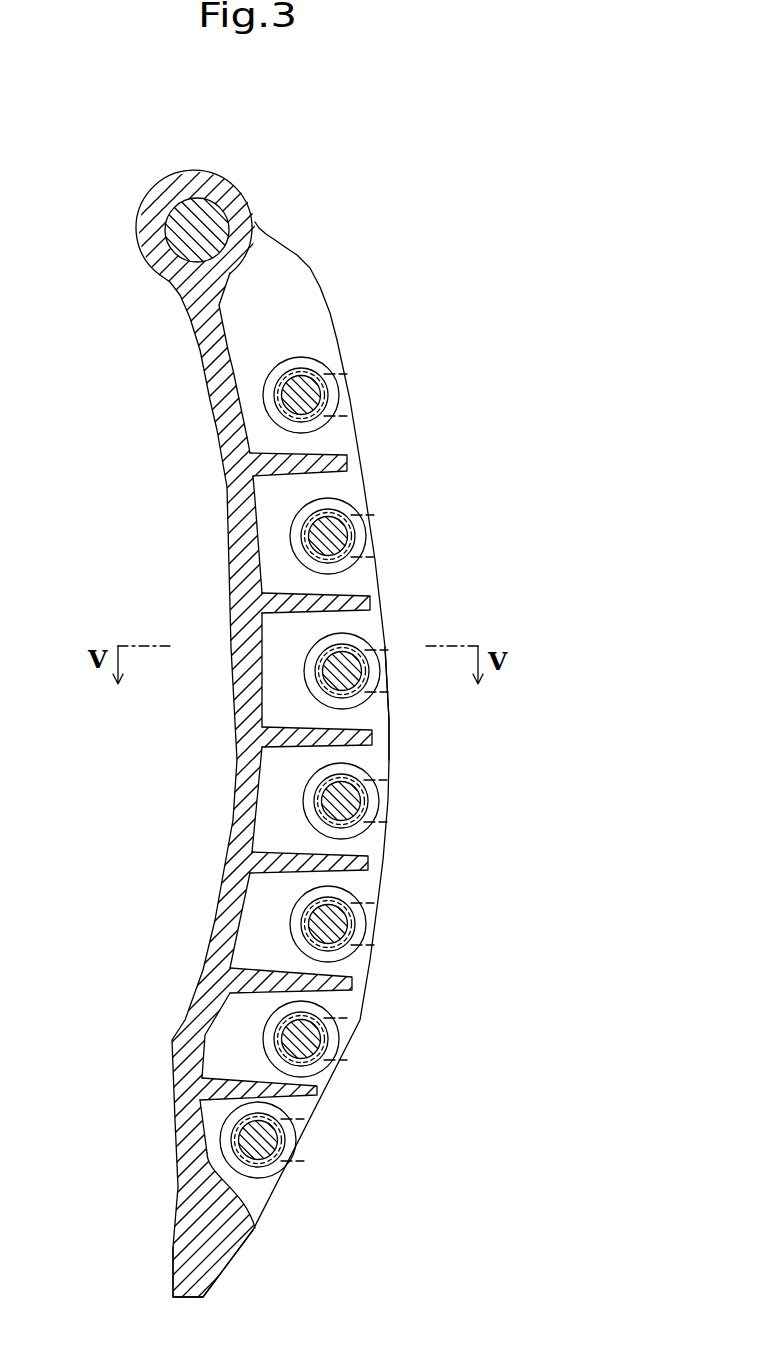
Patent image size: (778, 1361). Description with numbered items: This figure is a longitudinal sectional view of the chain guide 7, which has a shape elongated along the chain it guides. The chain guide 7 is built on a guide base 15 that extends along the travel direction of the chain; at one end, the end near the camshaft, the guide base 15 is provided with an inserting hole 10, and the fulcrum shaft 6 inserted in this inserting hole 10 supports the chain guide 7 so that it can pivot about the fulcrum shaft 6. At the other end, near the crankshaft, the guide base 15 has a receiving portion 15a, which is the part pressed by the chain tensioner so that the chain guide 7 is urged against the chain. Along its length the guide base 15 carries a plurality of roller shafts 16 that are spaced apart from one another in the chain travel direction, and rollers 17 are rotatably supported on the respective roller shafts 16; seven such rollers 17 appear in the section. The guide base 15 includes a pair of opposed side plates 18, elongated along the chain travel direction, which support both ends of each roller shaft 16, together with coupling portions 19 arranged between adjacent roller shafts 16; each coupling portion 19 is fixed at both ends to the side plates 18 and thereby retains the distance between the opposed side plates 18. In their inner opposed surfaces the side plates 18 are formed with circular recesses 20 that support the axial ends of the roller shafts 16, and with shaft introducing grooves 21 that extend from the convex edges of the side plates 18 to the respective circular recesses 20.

The fulcrum shaft 6 is at (188, 217).
The chain guide 7 is at (275, 240).
The inserting hole 10 is at (187, 243).
The guide base 15 is at (218, 457).
The receiving portion 15a is at (178, 1183).
The roller shaft 16 is at (288, 395).
The roller 17 is at (326, 366).
The side plate 18 is at (344, 431).
The coupling portion 19 is at (349, 464).
The circular recess 20 is at (330, 694).
The shaft introducing groove 21 is at (387, 686).